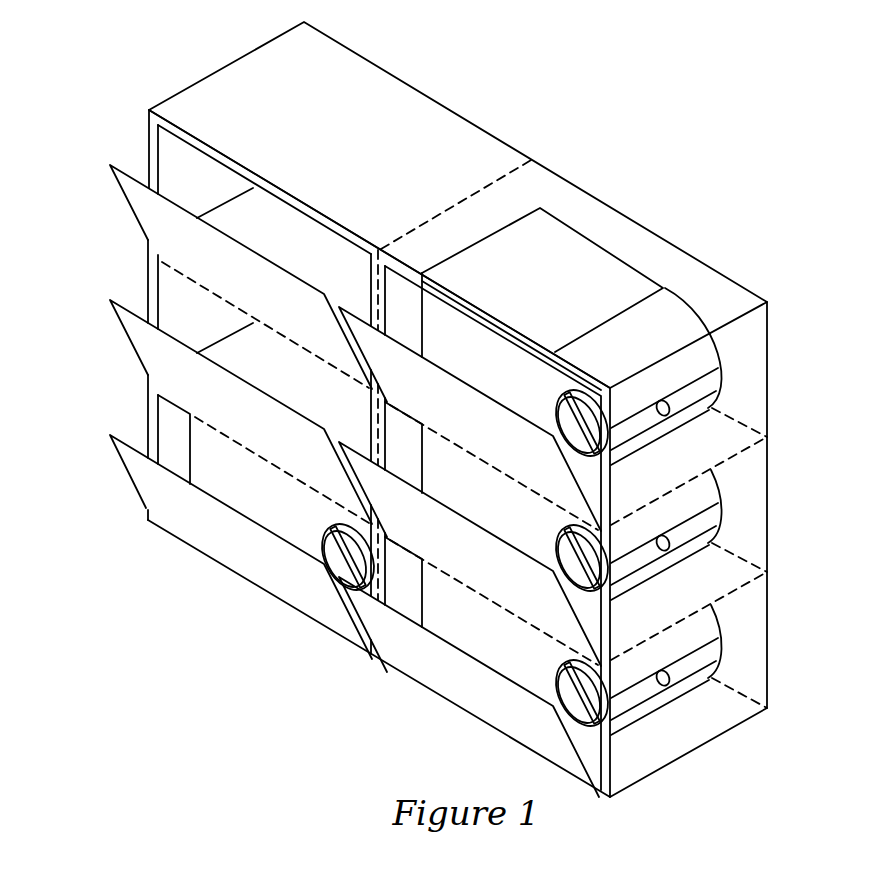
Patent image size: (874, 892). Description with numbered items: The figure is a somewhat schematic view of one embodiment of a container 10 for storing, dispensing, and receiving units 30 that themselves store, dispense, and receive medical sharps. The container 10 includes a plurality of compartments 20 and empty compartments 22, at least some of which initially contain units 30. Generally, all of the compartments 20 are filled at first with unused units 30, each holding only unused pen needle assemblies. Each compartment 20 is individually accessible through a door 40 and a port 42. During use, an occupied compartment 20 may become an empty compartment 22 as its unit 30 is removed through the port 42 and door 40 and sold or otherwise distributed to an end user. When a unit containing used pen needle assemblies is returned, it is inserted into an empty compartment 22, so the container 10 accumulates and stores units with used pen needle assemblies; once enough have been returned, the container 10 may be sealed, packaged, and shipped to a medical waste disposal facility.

The container 10 is at (750, 123).
The compartment 20 is at (755, 378).
The empty compartment 22 is at (170, 160).
The unit 30 is at (485, 376).
The door 40 is at (223, 283).
The port 42 is at (312, 212).